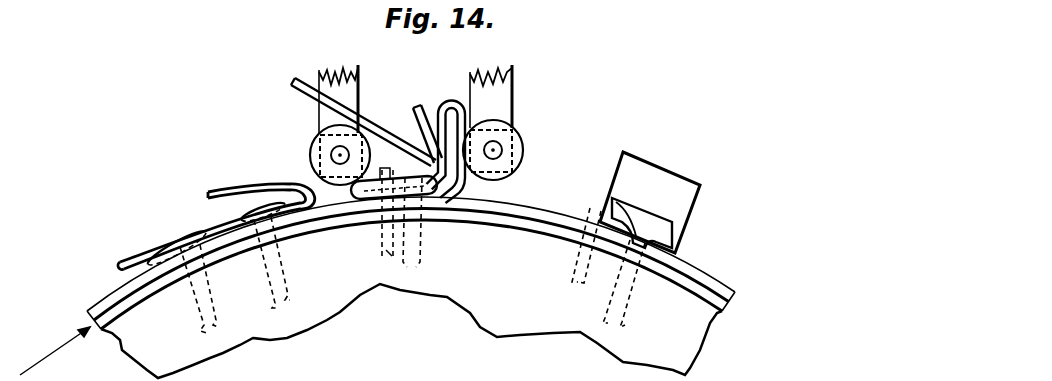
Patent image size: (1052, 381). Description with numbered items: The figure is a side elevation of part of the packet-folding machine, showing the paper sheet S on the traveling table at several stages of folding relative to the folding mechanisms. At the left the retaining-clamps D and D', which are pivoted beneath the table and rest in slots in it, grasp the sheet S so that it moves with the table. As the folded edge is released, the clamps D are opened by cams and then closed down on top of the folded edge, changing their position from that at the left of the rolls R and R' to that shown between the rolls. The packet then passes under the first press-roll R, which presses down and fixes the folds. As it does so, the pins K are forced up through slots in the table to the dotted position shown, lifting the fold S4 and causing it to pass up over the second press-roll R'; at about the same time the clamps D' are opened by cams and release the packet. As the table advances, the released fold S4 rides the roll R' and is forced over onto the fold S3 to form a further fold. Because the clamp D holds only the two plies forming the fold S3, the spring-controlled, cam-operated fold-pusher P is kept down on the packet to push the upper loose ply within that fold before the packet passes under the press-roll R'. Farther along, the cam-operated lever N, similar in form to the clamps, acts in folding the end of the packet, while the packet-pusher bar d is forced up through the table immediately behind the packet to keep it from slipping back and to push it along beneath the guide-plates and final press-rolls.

The sheet S is at (686, 163).
The fold S3 is at (363, 198).
The fold S4 is at (446, 103).
The fold-pusher P is at (397, 140).
The first press-roll R is at (348, 125).
The second press-roll R' is at (504, 122).
The retaining-clamp D is at (302, 251).
The retaining-clamp D' is at (284, 262).
The pins K is at (392, 254).
The cam-operated lever N is at (640, 220).
The bar d is at (588, 210).